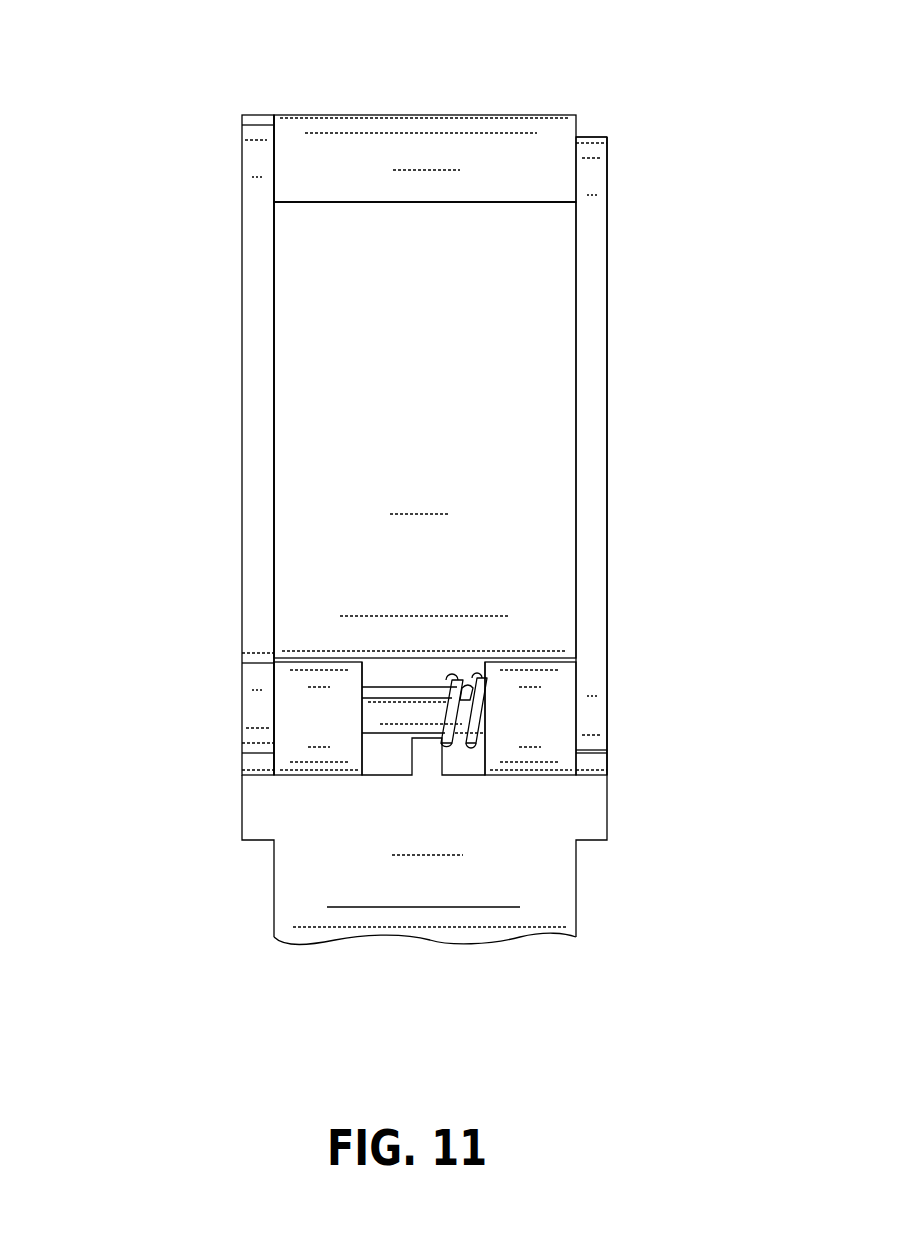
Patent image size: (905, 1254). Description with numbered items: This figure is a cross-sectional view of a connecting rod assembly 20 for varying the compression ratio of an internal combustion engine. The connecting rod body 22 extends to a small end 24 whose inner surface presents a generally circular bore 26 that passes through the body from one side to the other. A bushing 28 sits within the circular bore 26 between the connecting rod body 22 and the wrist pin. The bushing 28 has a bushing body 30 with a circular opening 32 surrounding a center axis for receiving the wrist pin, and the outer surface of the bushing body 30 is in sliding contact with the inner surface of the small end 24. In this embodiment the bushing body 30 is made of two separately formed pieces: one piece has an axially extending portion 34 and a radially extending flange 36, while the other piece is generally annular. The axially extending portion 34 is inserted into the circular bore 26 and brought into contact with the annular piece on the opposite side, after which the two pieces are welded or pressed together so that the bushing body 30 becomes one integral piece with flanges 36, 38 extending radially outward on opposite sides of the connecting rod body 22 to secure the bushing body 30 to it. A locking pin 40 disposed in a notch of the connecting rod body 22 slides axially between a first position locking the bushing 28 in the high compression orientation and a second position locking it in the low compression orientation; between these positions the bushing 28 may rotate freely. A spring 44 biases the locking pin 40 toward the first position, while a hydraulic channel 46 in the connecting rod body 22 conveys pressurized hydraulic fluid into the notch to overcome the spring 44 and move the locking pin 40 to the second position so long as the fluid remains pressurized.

The connecting rod assembly 20 is at (190, 280).
The connecting rod body 22 is at (461, 108).
The small end 24 is at (338, 142).
The circular bore 26 is at (515, 202).
The bushing 28 is at (616, 412).
The bushing body 30 is at (608, 532).
The circular opening 32 is at (363, 407).
The axially extending portion 34 is at (323, 222).
The flange 36 is at (242, 155).
The flange 38 is at (602, 162).
The locking pin 40 is at (528, 753).
The spring 44 is at (447, 774).
The hydraulic channel 46 is at (418, 885).